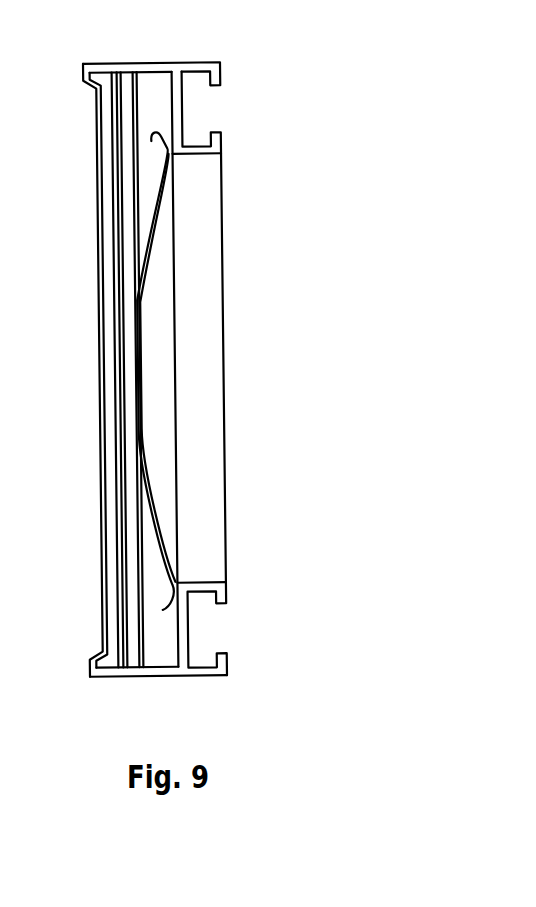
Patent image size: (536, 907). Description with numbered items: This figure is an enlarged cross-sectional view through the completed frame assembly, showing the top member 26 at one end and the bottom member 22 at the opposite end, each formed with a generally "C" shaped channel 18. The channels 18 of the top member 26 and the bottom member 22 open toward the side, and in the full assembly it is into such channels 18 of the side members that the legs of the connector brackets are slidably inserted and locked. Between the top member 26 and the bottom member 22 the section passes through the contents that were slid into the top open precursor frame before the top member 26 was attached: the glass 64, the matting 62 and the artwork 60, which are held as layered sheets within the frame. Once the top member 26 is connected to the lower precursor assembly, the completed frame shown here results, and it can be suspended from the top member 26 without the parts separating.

The "C" shaped channel 18 is at (210, 126).
The bottom member 22 is at (165, 677).
The top member 26 is at (161, 63).
The artwork 60 is at (113, 130).
The matting 62 is at (133, 97).
The glass 64 is at (99, 243).